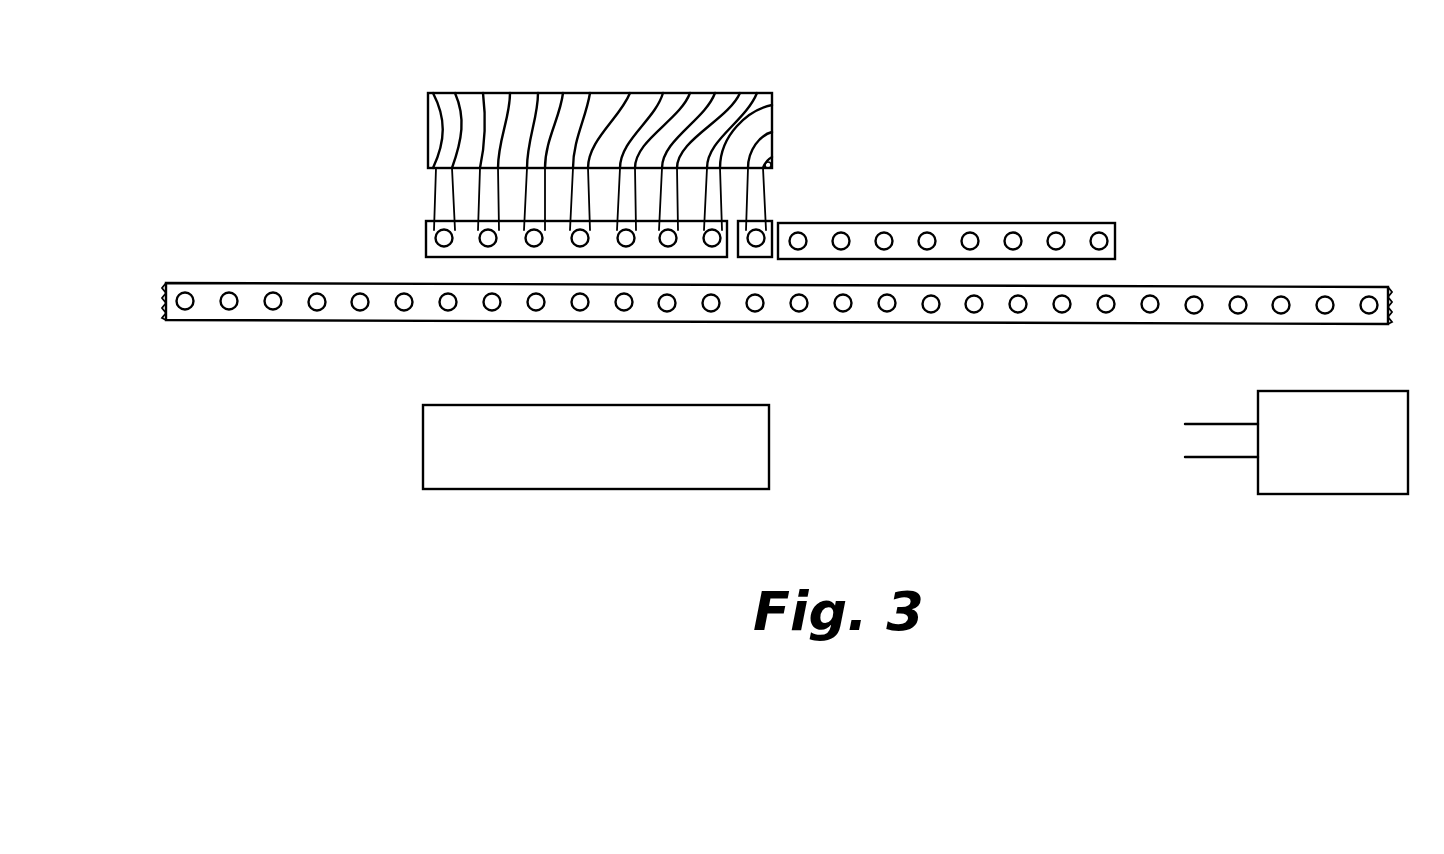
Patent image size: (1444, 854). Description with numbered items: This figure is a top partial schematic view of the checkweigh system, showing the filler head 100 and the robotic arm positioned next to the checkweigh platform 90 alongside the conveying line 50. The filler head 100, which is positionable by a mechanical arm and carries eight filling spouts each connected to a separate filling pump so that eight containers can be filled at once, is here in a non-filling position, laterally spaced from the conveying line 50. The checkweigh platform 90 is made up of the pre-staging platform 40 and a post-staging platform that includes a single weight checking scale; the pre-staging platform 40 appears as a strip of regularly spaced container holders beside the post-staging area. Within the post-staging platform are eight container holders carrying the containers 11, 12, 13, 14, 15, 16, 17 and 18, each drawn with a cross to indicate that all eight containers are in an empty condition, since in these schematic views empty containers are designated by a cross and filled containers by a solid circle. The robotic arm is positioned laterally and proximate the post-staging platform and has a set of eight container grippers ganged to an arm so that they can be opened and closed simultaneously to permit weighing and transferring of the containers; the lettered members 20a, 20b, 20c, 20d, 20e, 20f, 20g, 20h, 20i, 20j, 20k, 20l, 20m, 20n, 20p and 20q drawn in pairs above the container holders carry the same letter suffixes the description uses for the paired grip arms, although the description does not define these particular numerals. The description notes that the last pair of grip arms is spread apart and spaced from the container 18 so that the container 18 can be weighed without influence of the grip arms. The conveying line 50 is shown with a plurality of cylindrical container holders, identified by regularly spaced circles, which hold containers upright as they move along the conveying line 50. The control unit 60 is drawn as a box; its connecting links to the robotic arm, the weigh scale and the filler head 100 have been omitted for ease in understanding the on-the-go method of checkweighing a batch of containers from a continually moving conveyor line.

The empty container 11 is at (441, 247).
The empty container 12 is at (485, 247).
The empty container 13 is at (531, 247).
The empty container 14 is at (577, 247).
The empty container 15 is at (623, 247).
The empty container 16 is at (665, 247).
The empty container 17 is at (709, 247).
The empty container 18 is at (753, 247).
The wire 20a is at (433, 93).
The wire 20b is at (455, 93).
The wire 20c is at (483, 93).
The wire 20d is at (510, 93).
The wire 20e is at (538, 93).
The wire 20f is at (563, 93).
The wire 20g is at (590, 93).
The wire 20h is at (630, 93).
The wire 20i is at (663, 93).
The wire 20j is at (690, 93).
The wire 20k is at (715, 93).
The wire 20l is at (740, 93).
The wire 20m is at (757, 93).
The wire 20n is at (772, 105).
The wire 20p is at (772, 132).
The wire 20q is at (772, 157).
The pre-staging platform 40 is at (1115, 224).
The conveying line 50 is at (1355, 287).
The control unit 60 is at (1318, 391).
The checkweigh platform 90 is at (1050, 192).
The filler head 100 is at (769, 450).